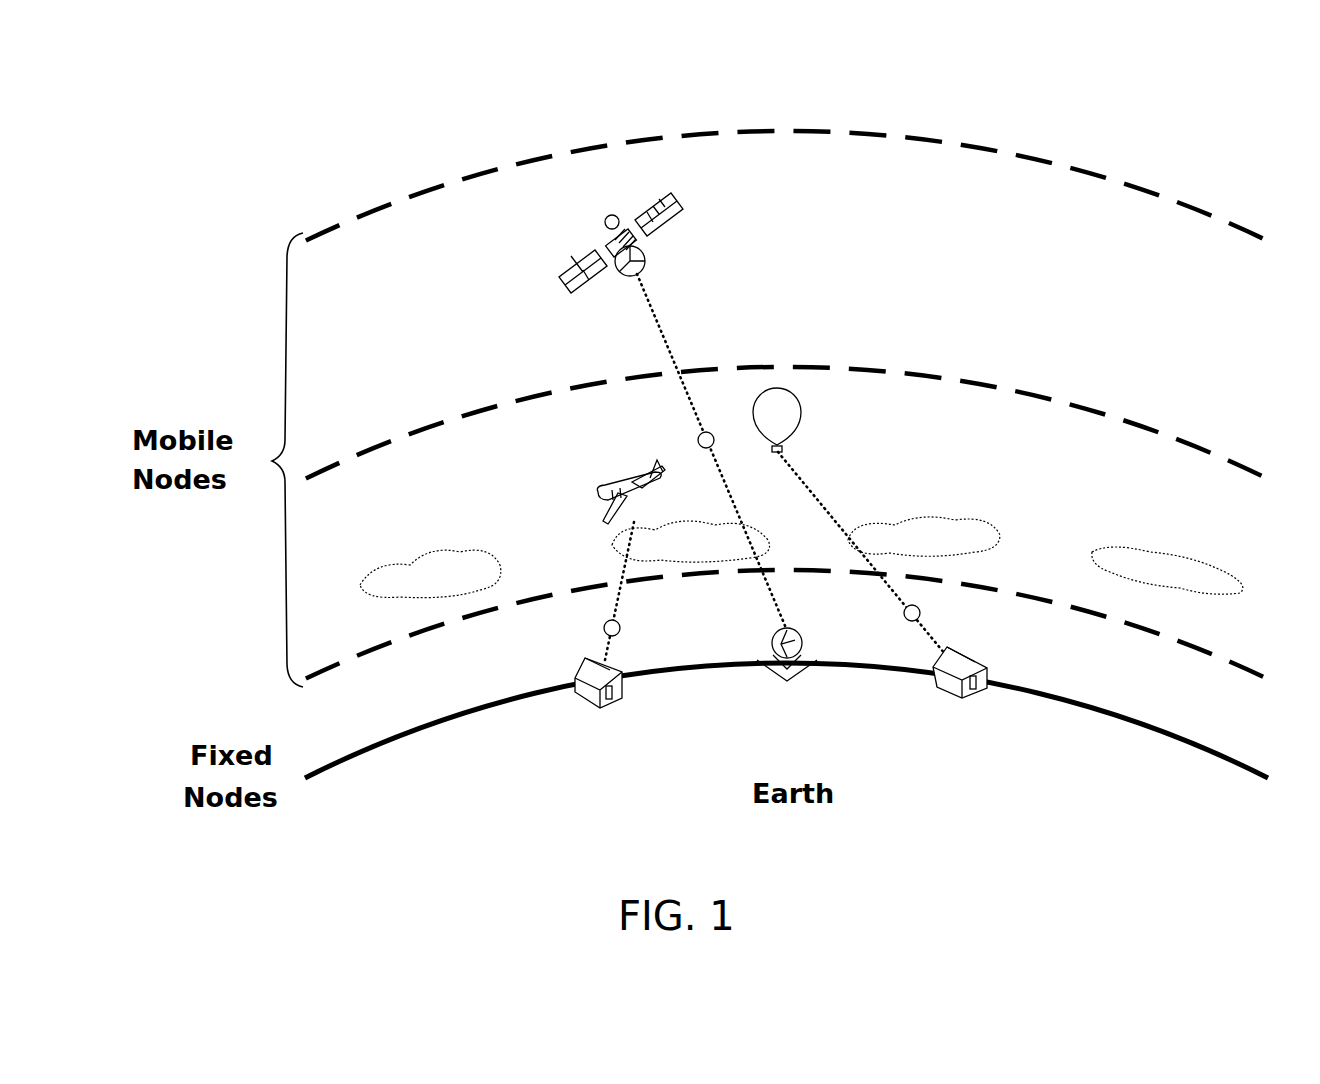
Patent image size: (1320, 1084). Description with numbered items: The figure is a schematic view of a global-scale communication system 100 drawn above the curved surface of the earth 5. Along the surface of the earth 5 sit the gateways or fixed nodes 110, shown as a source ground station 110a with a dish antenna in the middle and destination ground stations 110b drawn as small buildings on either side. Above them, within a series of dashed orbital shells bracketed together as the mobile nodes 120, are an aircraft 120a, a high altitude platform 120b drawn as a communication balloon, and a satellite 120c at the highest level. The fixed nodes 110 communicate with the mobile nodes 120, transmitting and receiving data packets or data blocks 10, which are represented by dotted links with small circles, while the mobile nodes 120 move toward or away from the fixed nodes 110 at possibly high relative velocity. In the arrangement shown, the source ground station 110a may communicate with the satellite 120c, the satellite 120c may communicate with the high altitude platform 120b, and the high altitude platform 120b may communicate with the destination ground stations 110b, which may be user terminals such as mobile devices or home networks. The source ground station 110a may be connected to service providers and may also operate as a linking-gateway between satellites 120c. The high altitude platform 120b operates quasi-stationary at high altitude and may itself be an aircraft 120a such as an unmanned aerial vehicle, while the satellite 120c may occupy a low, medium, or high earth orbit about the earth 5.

The global-scale communication system 100 is at (287, 104).
The earth 5 is at (418, 733).
The data packets or data blocks 10 is at (698, 440).
The fixed nodes 110 is at (780, 696).
The source ground station 110a is at (787, 681).
The destination ground station 110b is at (598, 710).
The mobile nodes 120 is at (711, 353).
The aircraft 120a is at (612, 488).
The high altitude platform 120b is at (801, 412).
The satellite 120c is at (606, 224).